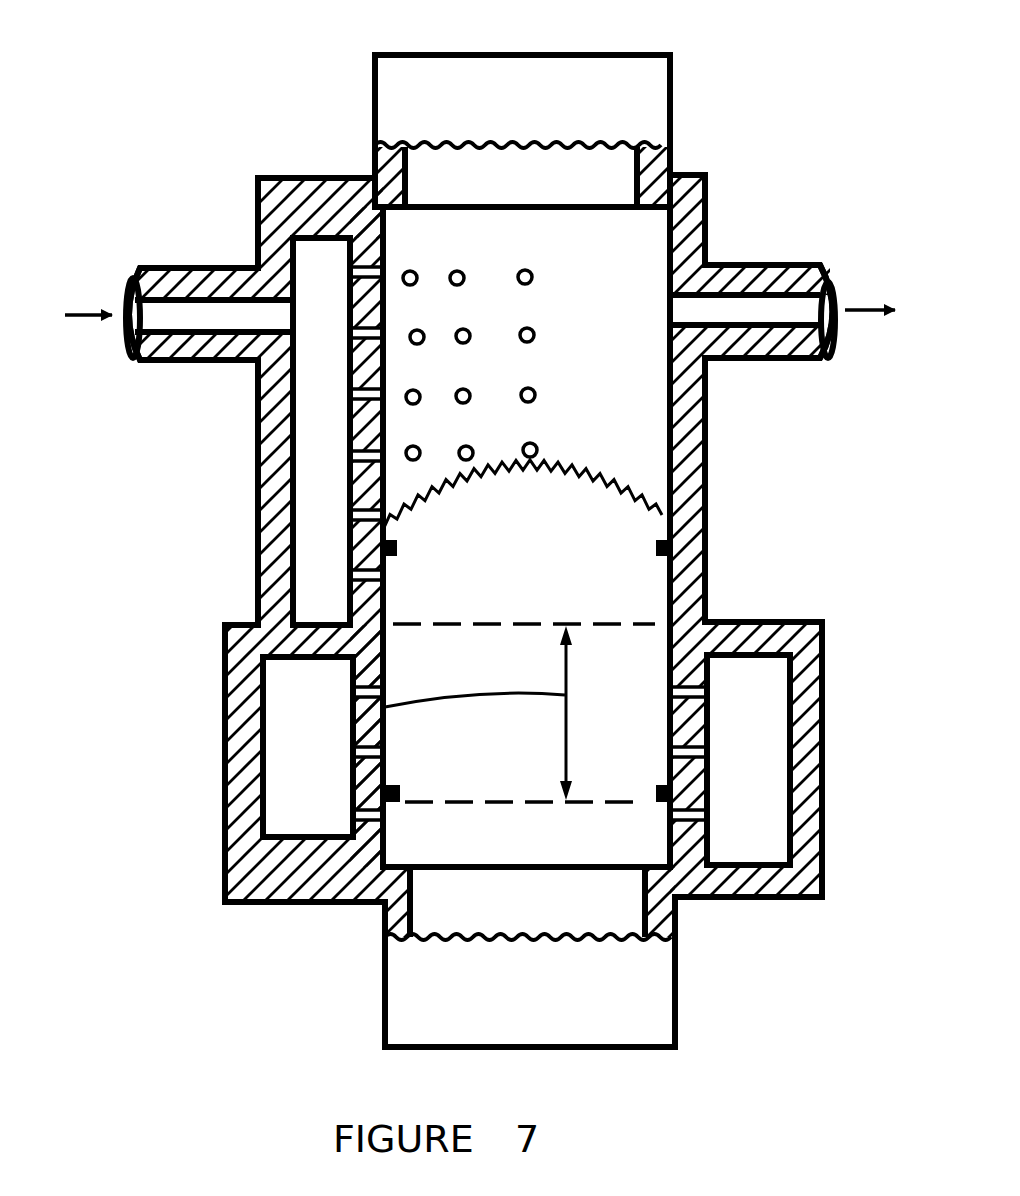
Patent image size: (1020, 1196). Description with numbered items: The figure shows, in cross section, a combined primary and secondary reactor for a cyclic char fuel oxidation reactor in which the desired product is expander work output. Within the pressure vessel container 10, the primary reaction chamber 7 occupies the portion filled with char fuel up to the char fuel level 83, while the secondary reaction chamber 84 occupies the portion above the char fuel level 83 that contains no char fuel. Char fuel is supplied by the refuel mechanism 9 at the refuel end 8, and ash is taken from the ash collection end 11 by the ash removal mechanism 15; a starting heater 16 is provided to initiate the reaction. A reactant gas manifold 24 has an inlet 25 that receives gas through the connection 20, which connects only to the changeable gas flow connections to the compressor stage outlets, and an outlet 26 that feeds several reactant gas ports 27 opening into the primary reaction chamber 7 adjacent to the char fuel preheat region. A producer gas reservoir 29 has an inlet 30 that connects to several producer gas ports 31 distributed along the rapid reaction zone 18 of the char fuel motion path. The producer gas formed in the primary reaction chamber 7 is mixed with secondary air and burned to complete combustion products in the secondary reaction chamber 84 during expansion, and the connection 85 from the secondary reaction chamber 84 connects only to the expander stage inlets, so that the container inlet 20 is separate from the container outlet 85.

The primary reaction chamber 7 is at (598, 608).
The refuel end 8 is at (550, 250).
The refuel mechanism 9 is at (570, 80).
The pressure vessel container 10 is at (345, 180).
The ash collection end 11 is at (672, 942).
The ash removal mechanism 15 is at (405, 993).
The starting heater 16 is at (665, 560).
The rapid reaction zone 18 is at (385, 707).
The connection 20 is at (220, 310).
The reactant gas manifold 24 is at (315, 558).
The inlet 25 is at (305, 312).
The outlet 26 is at (325, 432).
The reactant gas ports 27 is at (360, 395).
The producer gas reservoir 29 is at (313, 793).
The inlet 30 is at (722, 685).
The producer gas ports 31 is at (690, 695).
The char fuel level 83 is at (600, 478).
The secondary reaction chamber 84 is at (540, 355).
The connection 85 is at (740, 315).